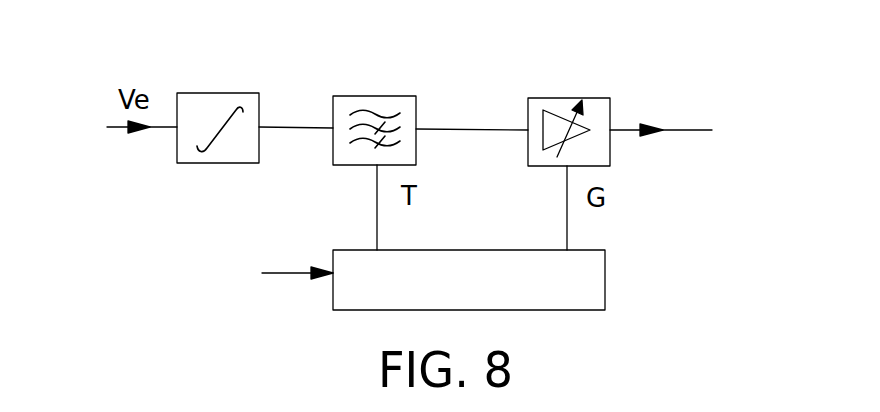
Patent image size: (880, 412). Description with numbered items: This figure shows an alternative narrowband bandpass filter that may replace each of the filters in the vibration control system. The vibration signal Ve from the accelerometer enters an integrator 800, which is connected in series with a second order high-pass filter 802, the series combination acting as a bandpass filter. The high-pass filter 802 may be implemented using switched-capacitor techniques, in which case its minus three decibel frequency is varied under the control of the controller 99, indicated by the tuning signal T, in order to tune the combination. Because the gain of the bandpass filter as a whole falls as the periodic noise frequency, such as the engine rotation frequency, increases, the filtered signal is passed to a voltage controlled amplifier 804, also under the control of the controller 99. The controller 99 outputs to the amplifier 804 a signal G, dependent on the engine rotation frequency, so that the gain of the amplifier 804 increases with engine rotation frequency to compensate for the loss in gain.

The integrator 800 is at (263, 69).
The second order high-pass filter 802 is at (363, 96).
The voltage controlled amplifier 804 is at (553, 99).
The controller 99 is at (597, 288).